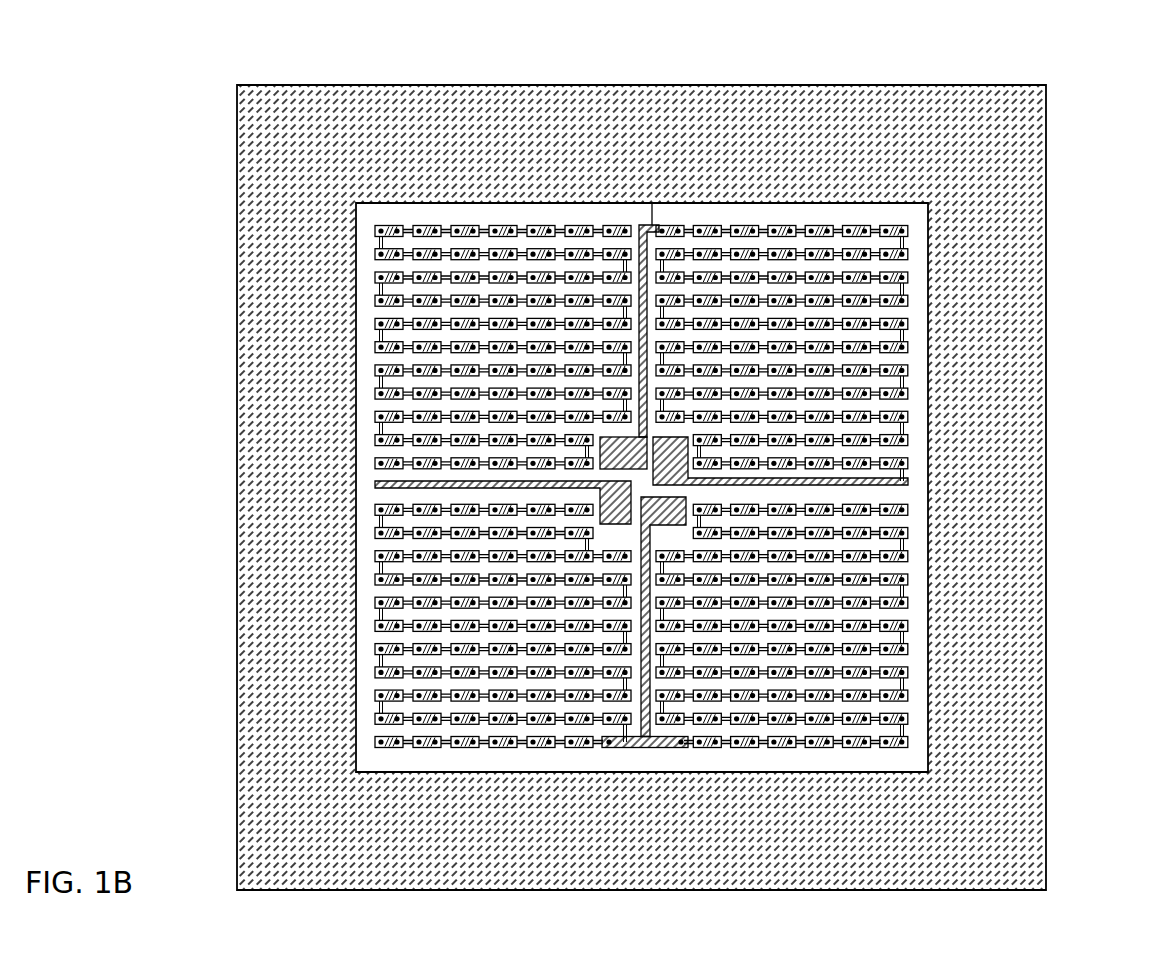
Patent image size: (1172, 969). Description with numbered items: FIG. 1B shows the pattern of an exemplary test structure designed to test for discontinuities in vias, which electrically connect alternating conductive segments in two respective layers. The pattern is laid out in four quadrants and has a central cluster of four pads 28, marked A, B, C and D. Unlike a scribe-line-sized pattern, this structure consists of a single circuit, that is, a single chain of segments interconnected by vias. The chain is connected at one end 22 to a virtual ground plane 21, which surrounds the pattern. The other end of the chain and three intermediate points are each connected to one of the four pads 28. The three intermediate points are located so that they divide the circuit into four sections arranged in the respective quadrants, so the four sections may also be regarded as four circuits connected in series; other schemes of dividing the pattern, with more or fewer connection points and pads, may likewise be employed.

The virtual ground plane 21 is at (366, 150).
The one end 22 is at (668, 212).
The pads 28 is at (690, 444).